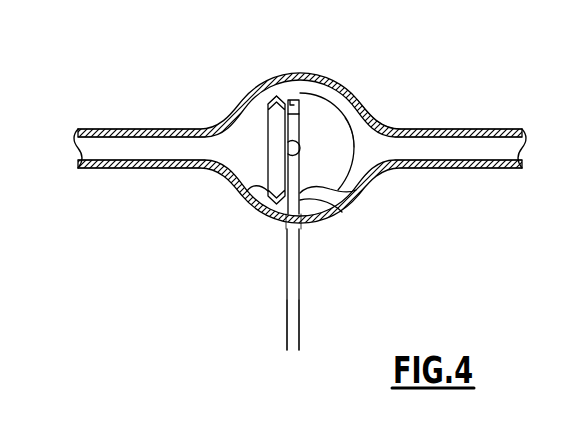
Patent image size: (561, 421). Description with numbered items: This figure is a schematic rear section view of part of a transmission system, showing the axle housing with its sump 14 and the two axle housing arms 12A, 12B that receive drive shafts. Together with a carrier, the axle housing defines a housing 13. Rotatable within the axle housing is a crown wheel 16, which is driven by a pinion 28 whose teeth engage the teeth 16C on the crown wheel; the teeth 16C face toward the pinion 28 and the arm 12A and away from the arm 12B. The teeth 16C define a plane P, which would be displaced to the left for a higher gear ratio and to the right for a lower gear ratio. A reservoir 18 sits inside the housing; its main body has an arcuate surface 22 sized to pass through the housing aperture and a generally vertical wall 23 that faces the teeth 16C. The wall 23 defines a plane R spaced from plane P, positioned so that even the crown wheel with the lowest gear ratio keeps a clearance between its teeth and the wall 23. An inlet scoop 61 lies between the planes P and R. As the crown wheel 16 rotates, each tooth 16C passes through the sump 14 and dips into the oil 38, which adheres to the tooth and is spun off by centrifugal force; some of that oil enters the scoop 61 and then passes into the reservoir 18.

The axle housing arm 12A is at (488, 170).
The axle housing arm 12B is at (100, 169).
The housing 13 is at (330, 130).
The sump 14 is at (250, 206).
The crown wheel 16 is at (275, 122).
The teeth 16C is at (278, 96).
The reservoir 18 is at (350, 125).
The arcuate surface 22 is at (388, 130).
The vertical wall 23 is at (282, 215).
The pinion 28 is at (288, 149).
The oil 38 is at (317, 212).
The scoop 61 is at (293, 103).
The plane R is at (300, 298).
The plane P is at (287, 320).